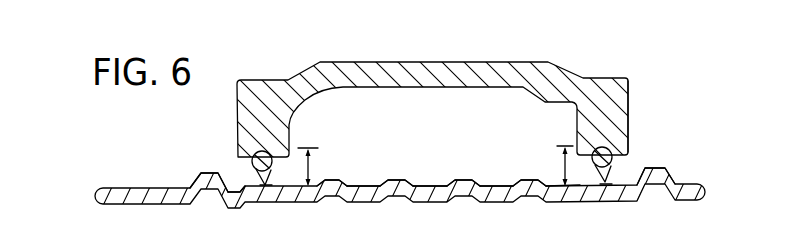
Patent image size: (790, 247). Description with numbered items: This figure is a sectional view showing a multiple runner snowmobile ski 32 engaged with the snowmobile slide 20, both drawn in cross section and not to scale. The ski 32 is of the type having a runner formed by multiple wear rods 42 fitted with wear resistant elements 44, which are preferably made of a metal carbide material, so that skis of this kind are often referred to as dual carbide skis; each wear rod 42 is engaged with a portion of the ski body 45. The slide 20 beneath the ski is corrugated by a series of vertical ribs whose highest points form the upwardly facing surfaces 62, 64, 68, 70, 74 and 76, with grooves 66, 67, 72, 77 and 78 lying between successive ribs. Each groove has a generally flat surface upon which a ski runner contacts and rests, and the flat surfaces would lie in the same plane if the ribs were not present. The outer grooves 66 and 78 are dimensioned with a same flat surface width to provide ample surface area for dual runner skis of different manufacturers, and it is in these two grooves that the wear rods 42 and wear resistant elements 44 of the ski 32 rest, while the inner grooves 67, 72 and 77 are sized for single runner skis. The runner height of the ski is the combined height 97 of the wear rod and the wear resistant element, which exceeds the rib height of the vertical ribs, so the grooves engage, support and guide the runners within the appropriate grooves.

The snowmobile slide 20 is at (87, 174).
The multiple runner snowmobile ski 32 is at (432, 58).
The wear rods 42 is at (250, 164).
The wear resistant elements 44 is at (268, 174).
The ski body 45 is at (628, 95).
The upwardly facing surface 62 is at (212, 172).
The upwardly facing surface 64 is at (334, 181).
The groove 66 is at (229, 188).
The groove 67 is at (364, 186).
The upwardly facing surface 68 is at (400, 181).
The upwardly facing surface 70 is at (467, 181).
The groove 72 is at (433, 186).
The upwardly facing surface 74 is at (527, 181).
The upwardly facing surface 76 is at (660, 166).
The groove 77 is at (500, 186).
The groove 78 is at (553, 186).
The combined height 97 is at (313, 168).